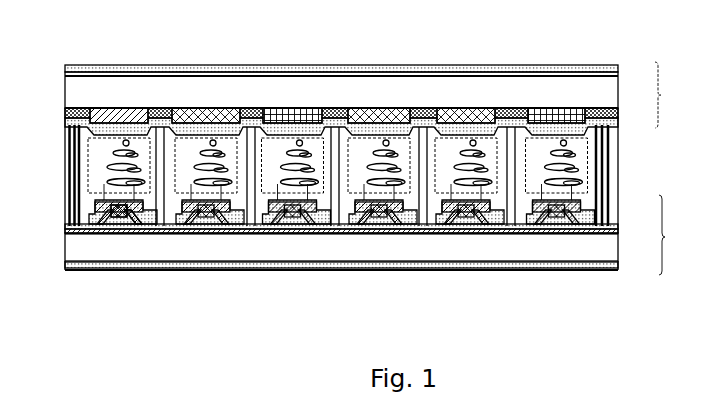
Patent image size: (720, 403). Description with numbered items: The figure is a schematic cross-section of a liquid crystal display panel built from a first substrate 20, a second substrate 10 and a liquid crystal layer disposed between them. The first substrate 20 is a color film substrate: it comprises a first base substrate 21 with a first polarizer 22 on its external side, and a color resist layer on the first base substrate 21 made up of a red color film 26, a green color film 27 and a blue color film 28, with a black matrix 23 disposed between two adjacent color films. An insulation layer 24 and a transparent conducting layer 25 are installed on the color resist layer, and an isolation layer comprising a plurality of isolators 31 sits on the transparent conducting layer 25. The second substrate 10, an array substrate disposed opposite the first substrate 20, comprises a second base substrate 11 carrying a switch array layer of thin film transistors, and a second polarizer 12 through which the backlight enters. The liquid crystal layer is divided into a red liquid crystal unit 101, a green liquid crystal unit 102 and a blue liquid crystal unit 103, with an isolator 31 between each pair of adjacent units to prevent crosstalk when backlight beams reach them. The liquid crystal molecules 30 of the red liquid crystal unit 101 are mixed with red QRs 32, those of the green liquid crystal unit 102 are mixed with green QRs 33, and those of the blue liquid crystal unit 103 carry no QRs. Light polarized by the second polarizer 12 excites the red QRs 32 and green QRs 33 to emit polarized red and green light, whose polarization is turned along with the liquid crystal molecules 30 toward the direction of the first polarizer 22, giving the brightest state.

The second substrate 10 is at (675, 235).
The second base substrate 11 is at (620, 236).
The second polarizer 12 is at (620, 264).
The first substrate 20 is at (671, 95).
The first base substrate 21 is at (618, 88).
The first polarizer 22 is at (618, 71).
The black matrix 23 is at (335, 112).
The insulation layer 24 is at (356, 71).
The transparent conducting layer 25 is at (68, 122).
The red color film 26 is at (112, 108).
The green color film 27 is at (203, 110).
The blue color film 28 is at (284, 112).
The liquid crystal molecules 30 is at (117, 234).
The isolator 31 is at (506, 175).
The red QRs 32 is at (143, 234).
The green QRs 33 is at (205, 234).
The red liquid crystal unit 101 is at (86, 165).
The green liquid crystal unit 102 is at (235, 233).
The blue liquid crystal unit 103 is at (330, 234).